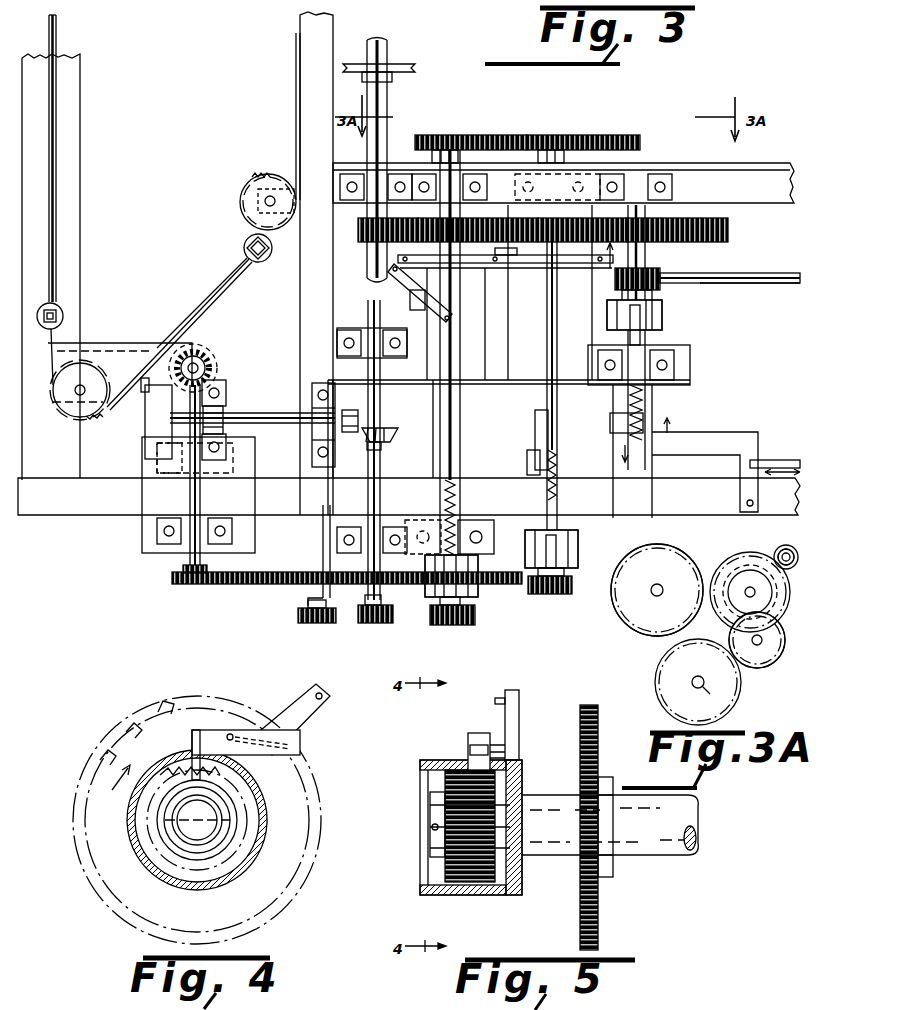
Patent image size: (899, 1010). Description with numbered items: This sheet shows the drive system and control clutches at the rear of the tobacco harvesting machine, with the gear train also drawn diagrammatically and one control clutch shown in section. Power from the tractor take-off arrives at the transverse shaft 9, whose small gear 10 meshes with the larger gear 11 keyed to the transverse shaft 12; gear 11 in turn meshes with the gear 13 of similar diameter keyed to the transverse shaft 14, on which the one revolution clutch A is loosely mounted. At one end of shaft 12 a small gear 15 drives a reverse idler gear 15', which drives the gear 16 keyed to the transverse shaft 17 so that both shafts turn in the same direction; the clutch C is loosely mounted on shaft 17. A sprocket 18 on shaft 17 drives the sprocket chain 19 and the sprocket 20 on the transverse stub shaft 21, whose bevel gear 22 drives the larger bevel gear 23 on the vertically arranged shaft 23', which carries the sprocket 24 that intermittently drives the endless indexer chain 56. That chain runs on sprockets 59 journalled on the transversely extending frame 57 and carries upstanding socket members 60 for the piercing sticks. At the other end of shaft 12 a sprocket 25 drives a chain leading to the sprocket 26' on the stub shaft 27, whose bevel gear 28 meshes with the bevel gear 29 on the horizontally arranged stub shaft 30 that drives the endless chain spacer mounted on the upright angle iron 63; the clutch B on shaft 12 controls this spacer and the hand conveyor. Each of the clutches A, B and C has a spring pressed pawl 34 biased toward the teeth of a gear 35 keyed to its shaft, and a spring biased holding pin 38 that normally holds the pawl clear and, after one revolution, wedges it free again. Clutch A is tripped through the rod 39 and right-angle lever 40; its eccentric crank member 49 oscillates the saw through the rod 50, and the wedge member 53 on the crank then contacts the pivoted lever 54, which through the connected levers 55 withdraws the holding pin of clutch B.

In FIG. 3, the transverse shaft 9 is at (375, 46).
In FIG. 3A, the transverse shaft 9 is at (785, 565).
In FIG. 3, the small gear 10 is at (362, 229).
In FIG. 3A, the small gear 10 is at (789, 553).
In FIG. 3, the larger gear 11 is at (416, 230).
In FIG. 3A, the larger gear 11 is at (746, 549).
In FIG. 3, the transverse shaft 12 is at (450, 216).
In FIG. 3A, the transverse shaft 12 is at (753, 580).
In FIG. 3, the gear 13 is at (606, 221).
In FIG. 3A, the gear 13 is at (693, 558).
In FIG. 3, the transverse shaft 14 is at (646, 217).
In FIG. 3A, the transverse shaft 14 is at (663, 590).
In FIG. 3, the small gear 15 is at (471, 135).
In FIG. 3A, the small gear 15 is at (768, 638).
In FIG. 3A, the reverse idler gear 15' is at (769, 646).
In FIG. 3, the gear 16 is at (583, 135).
In FIG. 3A, the gear 16 is at (660, 668).
In FIG. 3, the transverse shaft 17 is at (549, 310).
In FIG. 3A, the transverse shaft 17 is at (703, 687).
In FIG. 3, the sprocket 18 is at (548, 596).
In FIG. 3, the sprocket chain 19 is at (285, 588).
In FIG. 3, the sprocket 20 is at (195, 585).
In FIG. 3, the transverse stub shaft 21 is at (200, 499).
In FIG. 3, the bevel gear 22 is at (207, 372).
In FIG. 3, the bevel gear 23 is at (182, 345).
In FIG. 3, the vertically arranged shaft 23' is at (109, 381).
In FIG. 3, the sprocket 24 is at (165, 350).
In FIG. 3, the sprocket 25 is at (455, 627).
In FIG. 3, the sprocket 26' is at (380, 624).
In FIG. 3, the stub shaft 27 is at (380, 463).
In FIG. 3, the bevel gear 28 is at (386, 432).
In FIG. 3, the bevel gear 29 is at (352, 406).
In FIG. 3, the horizontally arranged stub shaft 30 is at (270, 414).
In FIG. 4, the spring pressed pawl 34 is at (222, 730).
In FIG. 5, the spring pressed pawl 34 is at (468, 750).
In FIG. 3, the gear 35 is at (318, 625).
In FIG. 4, the gear 35 is at (170, 772).
In FIG. 5, the gear 35 is at (470, 880).
In FIG. 3, the spring biased holding pin 38 is at (609, 315).
In FIG. 3, the rod 39 is at (770, 458).
In FIG. 3, the right-angle lever 40 is at (718, 432).
In FIG. 3, the eccentric crank member 49 is at (665, 276).
In FIG. 3, the rod 50 is at (735, 284).
In FIG. 3, the wedge member 53 is at (652, 268).
In FIG. 3, the pivoted lever 54 is at (606, 263).
In FIG. 3, the levers 55 is at (400, 262).
In FIG. 3, the endless indexer chain 56 is at (56, 167).
In FIG. 3, the transversely extending frame 57 is at (82, 68).
In FIG. 3, the sprockets 59 is at (243, 190).
In FIG. 3, the socket members 60 is at (63, 313).
In FIG. 3, the upright angle iron 63 is at (146, 418).
In FIG. 3, the one revolution clutch A is at (663, 312).
In FIG. 3, the clutch B is at (478, 594).
In FIG. 3, the one-revolution clutch C is at (578, 552).